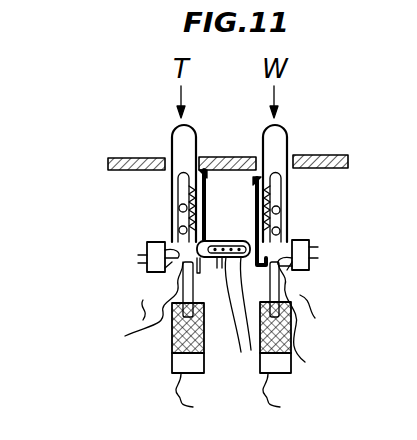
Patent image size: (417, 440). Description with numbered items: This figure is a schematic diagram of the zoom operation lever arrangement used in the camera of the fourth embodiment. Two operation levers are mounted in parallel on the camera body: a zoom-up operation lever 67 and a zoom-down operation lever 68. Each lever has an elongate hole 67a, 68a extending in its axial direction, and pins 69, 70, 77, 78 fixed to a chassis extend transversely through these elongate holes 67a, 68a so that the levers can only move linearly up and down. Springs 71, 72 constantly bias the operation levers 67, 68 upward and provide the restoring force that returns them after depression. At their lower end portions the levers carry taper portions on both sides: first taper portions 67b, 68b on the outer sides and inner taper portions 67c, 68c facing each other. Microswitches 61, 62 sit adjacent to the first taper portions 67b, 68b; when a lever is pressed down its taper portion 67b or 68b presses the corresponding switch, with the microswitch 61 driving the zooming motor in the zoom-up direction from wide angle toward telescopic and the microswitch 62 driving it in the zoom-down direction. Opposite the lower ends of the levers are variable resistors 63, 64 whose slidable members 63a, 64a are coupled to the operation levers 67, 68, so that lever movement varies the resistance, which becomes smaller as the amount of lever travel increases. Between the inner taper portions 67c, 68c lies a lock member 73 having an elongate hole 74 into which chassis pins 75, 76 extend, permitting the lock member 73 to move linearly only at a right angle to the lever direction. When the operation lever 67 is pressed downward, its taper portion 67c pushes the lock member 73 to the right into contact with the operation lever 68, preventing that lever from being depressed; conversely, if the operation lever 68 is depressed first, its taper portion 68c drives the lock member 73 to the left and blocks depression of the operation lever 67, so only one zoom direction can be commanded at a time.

The microswitch 61 is at (147, 260).
The microswitch 62 is at (310, 272).
The variable resistor 63 is at (174, 341).
The slidable member 63a is at (138, 307).
The variable resistor 64 is at (290, 378).
The slidable member 64a is at (312, 320).
The zoom-up operation lever 67 is at (178, 130).
The elongate hole 67a is at (174, 182).
The first taper portion 67b is at (146, 246).
The inner taper portion 67c is at (232, 228).
The zoom-down operation lever 68 is at (278, 130).
The elongate hole 68a is at (283, 182).
The first taper portion 68b is at (310, 252).
The inner taper portion 68c is at (255, 225).
The pin 69 is at (172, 192).
The pin 70 is at (333, 158).
The spring 71 is at (172, 225).
The spring 72 is at (287, 215).
The lock member 73 is at (190, 366).
The elongate hole 74 is at (215, 262).
The pin 75 is at (230, 305).
The pin 76 is at (224, 304).
The pin 77 is at (177, 235).
The pin 78 is at (300, 232).